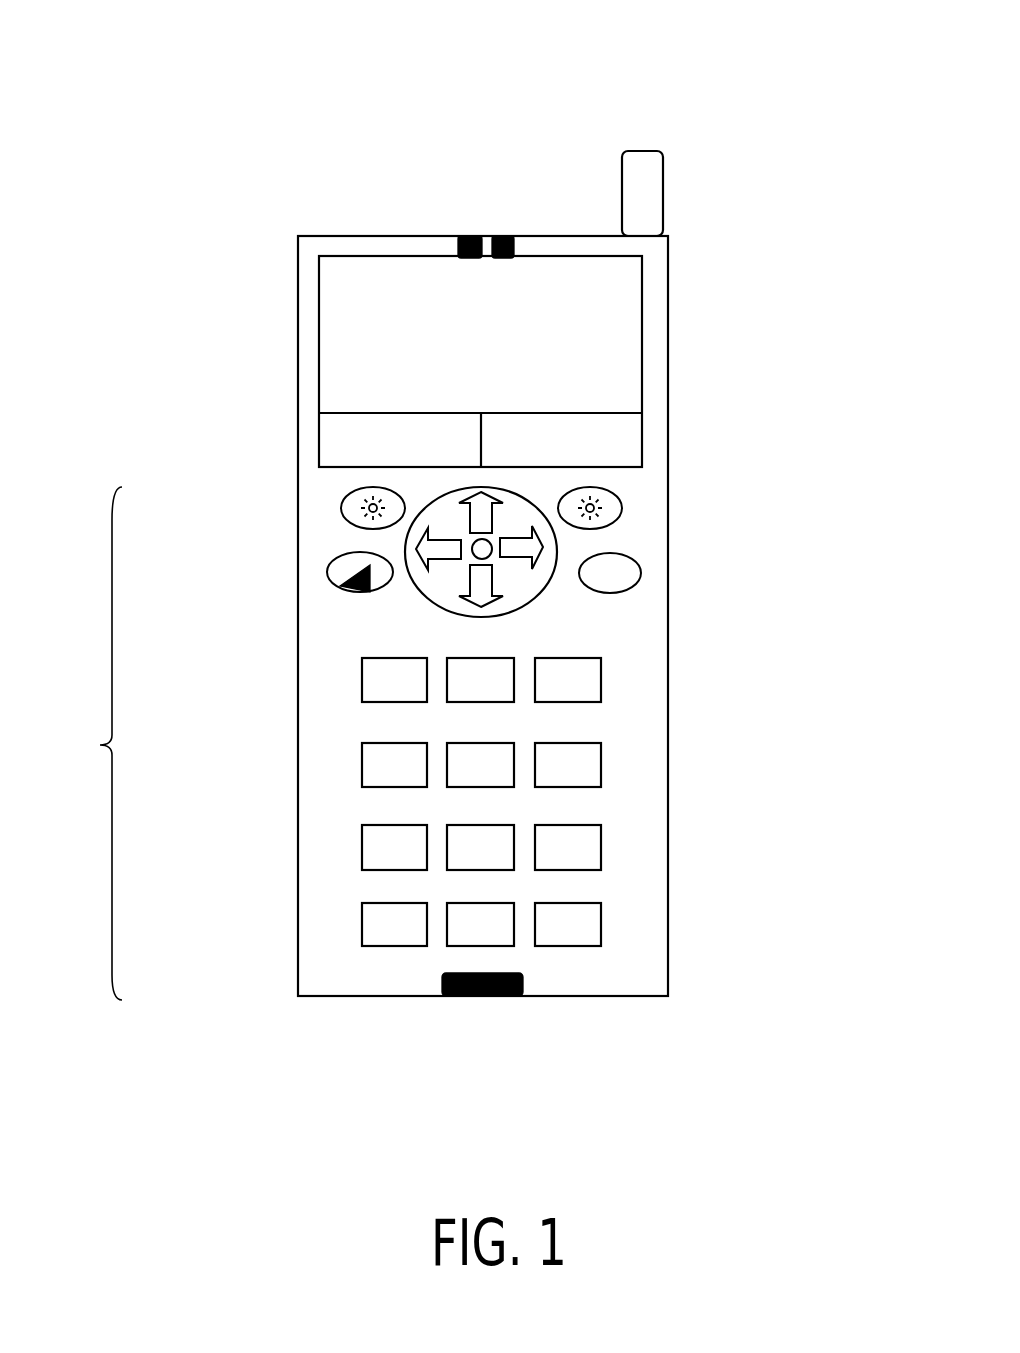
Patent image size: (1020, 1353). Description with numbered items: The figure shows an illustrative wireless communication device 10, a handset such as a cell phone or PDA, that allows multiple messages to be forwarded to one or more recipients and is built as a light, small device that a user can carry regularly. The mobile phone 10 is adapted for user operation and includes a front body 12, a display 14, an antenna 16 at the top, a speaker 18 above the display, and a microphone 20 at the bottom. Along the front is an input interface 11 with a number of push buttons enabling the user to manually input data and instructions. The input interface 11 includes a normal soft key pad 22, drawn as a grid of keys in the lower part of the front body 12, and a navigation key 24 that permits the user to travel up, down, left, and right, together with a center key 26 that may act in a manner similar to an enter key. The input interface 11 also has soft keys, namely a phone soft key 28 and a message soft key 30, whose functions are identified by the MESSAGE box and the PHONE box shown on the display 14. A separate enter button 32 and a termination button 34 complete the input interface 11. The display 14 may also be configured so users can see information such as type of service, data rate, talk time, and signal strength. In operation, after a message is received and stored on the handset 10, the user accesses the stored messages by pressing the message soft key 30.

The wireless communication device 10 is at (530, 63).
The input interface 11 is at (79, 743).
The front body 12 is at (340, 236).
The display 14 is at (642, 333).
The antenna 16 is at (664, 208).
The speaker 18 is at (482, 236).
The microphone 20 is at (475, 996).
The soft key pad 22 is at (610, 652).
The navigation key 24 is at (557, 545).
The center select button 26 is at (490, 556).
The phone soft key 28 is at (622, 510).
The message soft key 30 is at (341, 506).
The enter button 32 is at (344, 580).
The termination button 34 is at (641, 573).